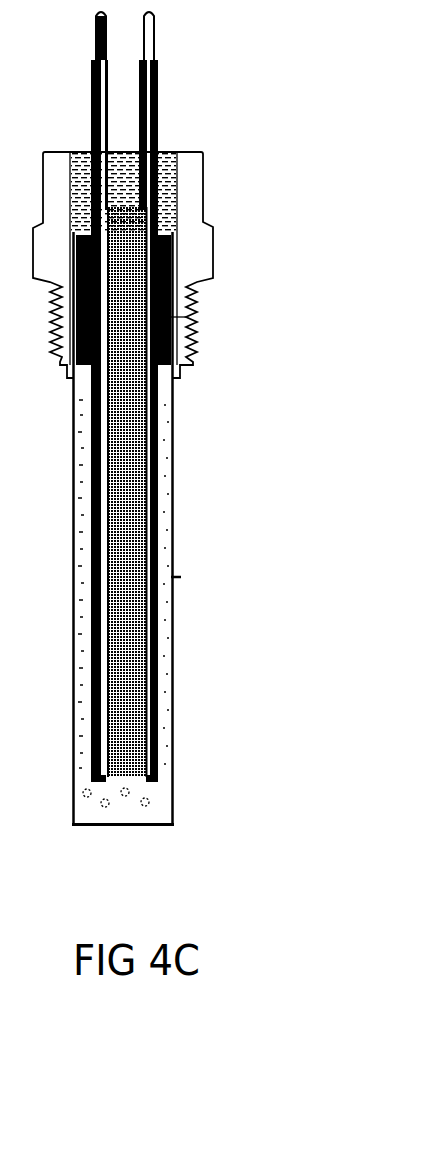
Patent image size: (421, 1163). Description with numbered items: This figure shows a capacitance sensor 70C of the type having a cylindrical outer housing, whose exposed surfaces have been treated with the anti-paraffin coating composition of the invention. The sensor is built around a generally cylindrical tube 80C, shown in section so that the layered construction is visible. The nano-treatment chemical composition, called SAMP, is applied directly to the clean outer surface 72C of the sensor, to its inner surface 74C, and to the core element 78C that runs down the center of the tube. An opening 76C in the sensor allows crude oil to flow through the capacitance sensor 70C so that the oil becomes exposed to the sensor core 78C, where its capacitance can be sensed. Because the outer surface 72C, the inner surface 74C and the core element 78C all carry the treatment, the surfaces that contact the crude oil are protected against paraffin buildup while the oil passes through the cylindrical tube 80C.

The capacitance sensor 70C is at (240, 387).
The outer surface 72C is at (174, 613).
The inner surface 74C is at (168, 647).
The opening 76C is at (176, 431).
The core element 78C is at (149, 523).
The cylindrical tube 80C is at (173, 826).